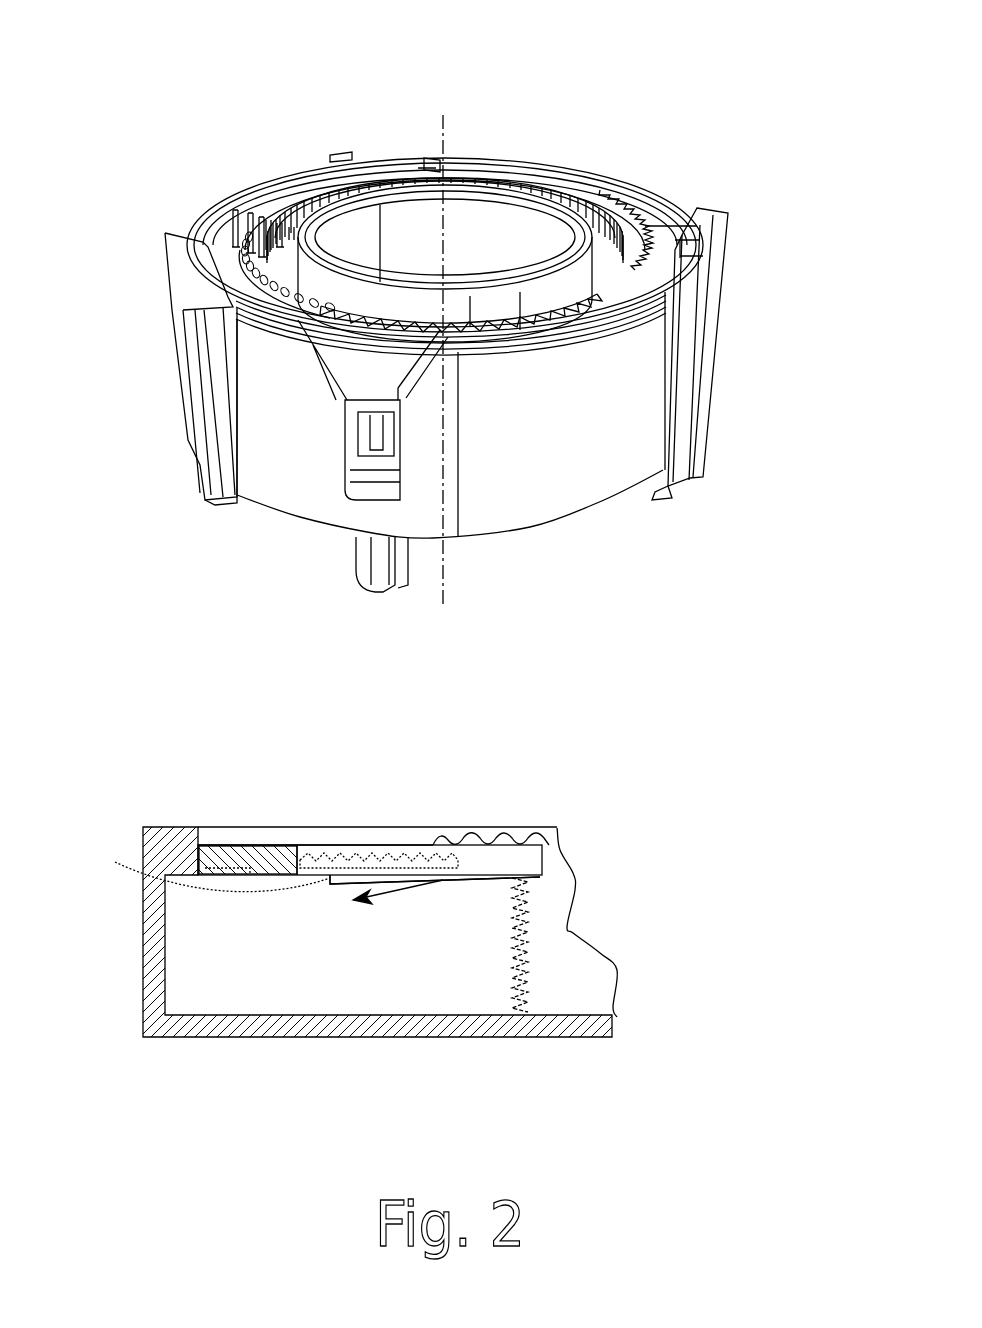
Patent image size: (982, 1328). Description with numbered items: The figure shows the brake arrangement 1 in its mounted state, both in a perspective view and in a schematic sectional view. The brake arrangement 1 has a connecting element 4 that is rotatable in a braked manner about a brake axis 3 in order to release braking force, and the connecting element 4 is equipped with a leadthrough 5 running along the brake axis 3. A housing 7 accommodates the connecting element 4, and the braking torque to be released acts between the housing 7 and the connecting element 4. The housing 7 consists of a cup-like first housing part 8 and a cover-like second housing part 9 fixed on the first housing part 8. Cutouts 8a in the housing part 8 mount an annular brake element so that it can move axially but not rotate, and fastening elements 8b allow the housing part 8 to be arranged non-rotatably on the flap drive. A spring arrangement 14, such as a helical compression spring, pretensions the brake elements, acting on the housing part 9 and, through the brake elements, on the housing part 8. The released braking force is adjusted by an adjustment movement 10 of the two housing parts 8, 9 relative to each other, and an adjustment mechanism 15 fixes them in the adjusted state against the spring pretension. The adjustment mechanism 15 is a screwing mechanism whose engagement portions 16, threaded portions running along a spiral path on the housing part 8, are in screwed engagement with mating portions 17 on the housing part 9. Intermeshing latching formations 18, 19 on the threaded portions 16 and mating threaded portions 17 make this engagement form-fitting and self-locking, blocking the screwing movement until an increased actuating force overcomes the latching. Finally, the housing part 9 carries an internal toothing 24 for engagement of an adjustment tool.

The brake arrangement 1 is at (736, 80).
The brake axis 3 is at (445, 143).
The connecting element 4 is at (618, 267).
The leadthrough 5 is at (494, 242).
The housing 7 is at (740, 318).
The first housing part 8 is at (613, 413).
The cutouts 8a is at (347, 468).
The fastening elements 8b is at (400, 573).
The second housing part 9 is at (640, 227).
The adjustment movement 10 is at (397, 897).
The spring arrangement 14 is at (527, 907).
The adjustment mechanism 15 is at (435, 879).
The engagement portions 16 is at (457, 840).
The mating portions 17 is at (330, 880).
The latching formation 18 is at (473, 845).
The latching formation 19 is at (201, 868).
The internal toothing 24 is at (266, 265).